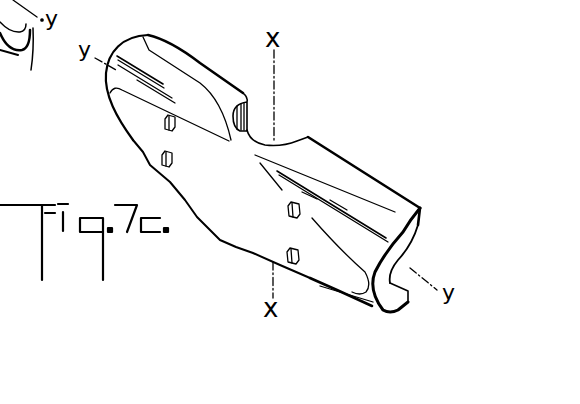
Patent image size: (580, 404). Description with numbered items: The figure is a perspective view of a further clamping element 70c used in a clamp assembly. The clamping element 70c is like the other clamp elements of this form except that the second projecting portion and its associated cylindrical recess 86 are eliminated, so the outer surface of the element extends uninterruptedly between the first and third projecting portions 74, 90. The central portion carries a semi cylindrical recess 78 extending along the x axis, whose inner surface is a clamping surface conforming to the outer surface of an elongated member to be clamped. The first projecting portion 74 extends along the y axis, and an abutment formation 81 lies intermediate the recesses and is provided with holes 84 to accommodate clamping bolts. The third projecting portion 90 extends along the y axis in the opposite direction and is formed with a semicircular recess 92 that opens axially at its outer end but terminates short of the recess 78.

The clamping element 70c is at (443, 173).
The first projecting portion 74 is at (137, 127).
The semi cylindrical recess 78 is at (288, 136).
The abutment formation 81 is at (244, 110).
The holes 84 is at (162, 161).
The cylindrical recess 86 is at (287, 258).
The third projecting portion 90 is at (362, 293).
The semicircular recess 92 is at (418, 238).